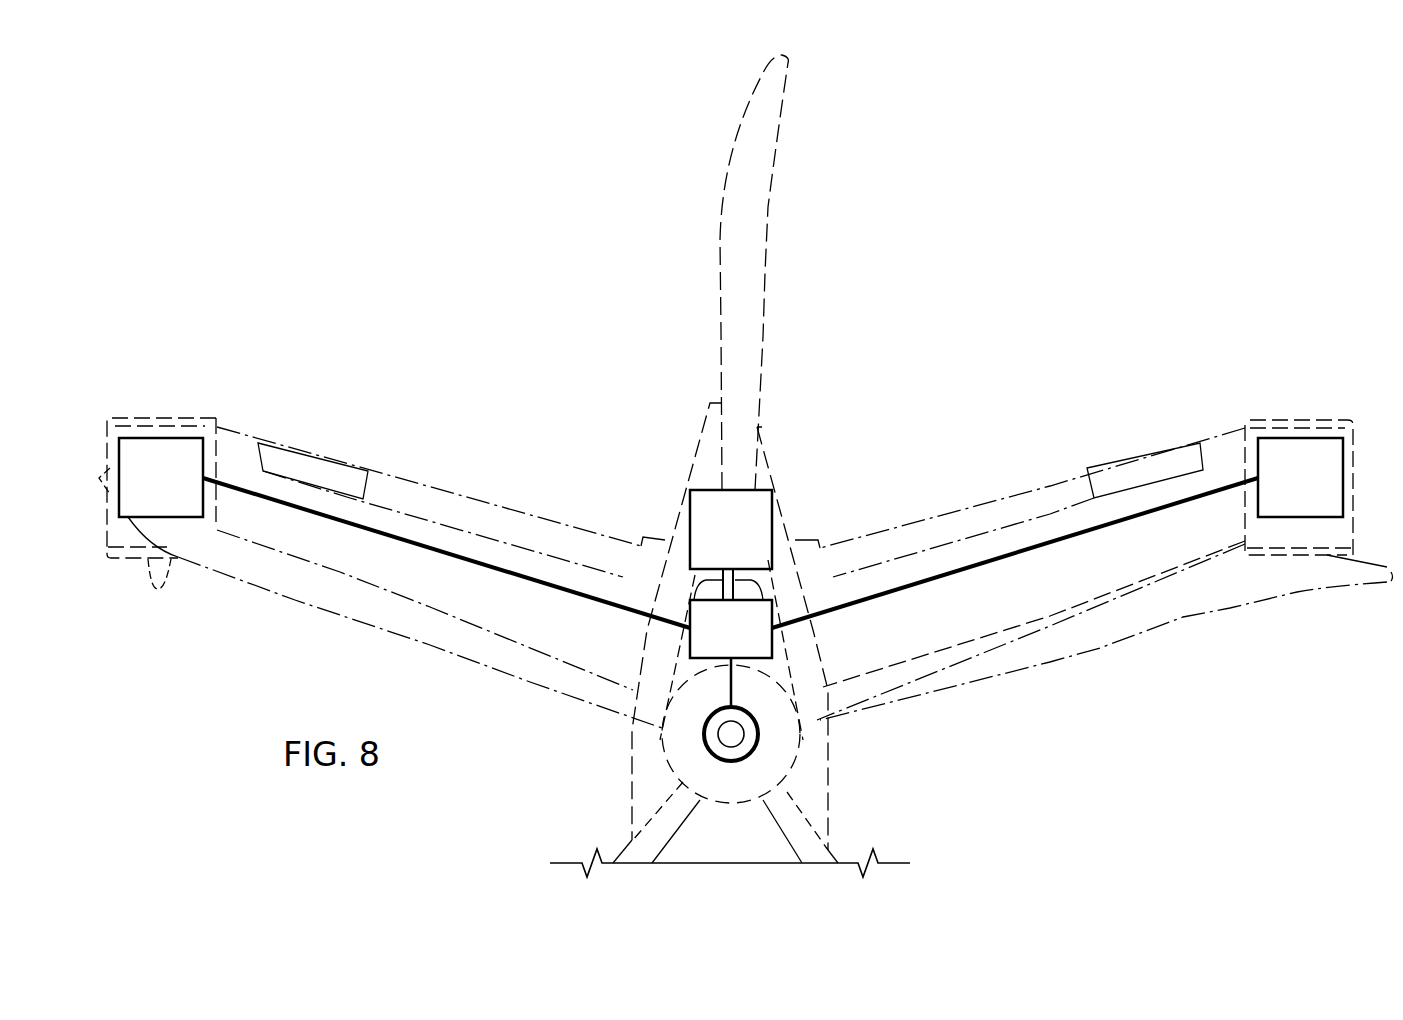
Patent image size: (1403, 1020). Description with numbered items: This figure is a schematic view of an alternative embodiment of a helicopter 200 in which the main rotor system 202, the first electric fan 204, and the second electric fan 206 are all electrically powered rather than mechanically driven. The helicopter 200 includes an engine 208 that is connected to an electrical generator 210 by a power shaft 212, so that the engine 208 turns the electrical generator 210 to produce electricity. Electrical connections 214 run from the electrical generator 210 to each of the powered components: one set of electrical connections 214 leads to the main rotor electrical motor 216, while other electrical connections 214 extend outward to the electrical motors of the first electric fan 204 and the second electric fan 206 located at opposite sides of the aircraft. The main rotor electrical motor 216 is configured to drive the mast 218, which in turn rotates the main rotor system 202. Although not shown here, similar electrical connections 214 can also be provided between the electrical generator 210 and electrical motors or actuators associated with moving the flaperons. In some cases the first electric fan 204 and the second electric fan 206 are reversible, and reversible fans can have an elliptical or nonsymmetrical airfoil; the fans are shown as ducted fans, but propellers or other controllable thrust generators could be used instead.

The helicopter 200 is at (746, 466).
The main rotor system 202 is at (796, 768).
The first electric fan 204 is at (1281, 492).
The second electric fan 206 is at (142, 492).
The engine 208 is at (712, 543).
The electrical generator 210 is at (712, 643).
The power shaft 212 is at (724, 591).
The electrical connections 214 is at (568, 593).
The main rotor electrical motor 216 is at (704, 730).
The mast 218 is at (738, 747).